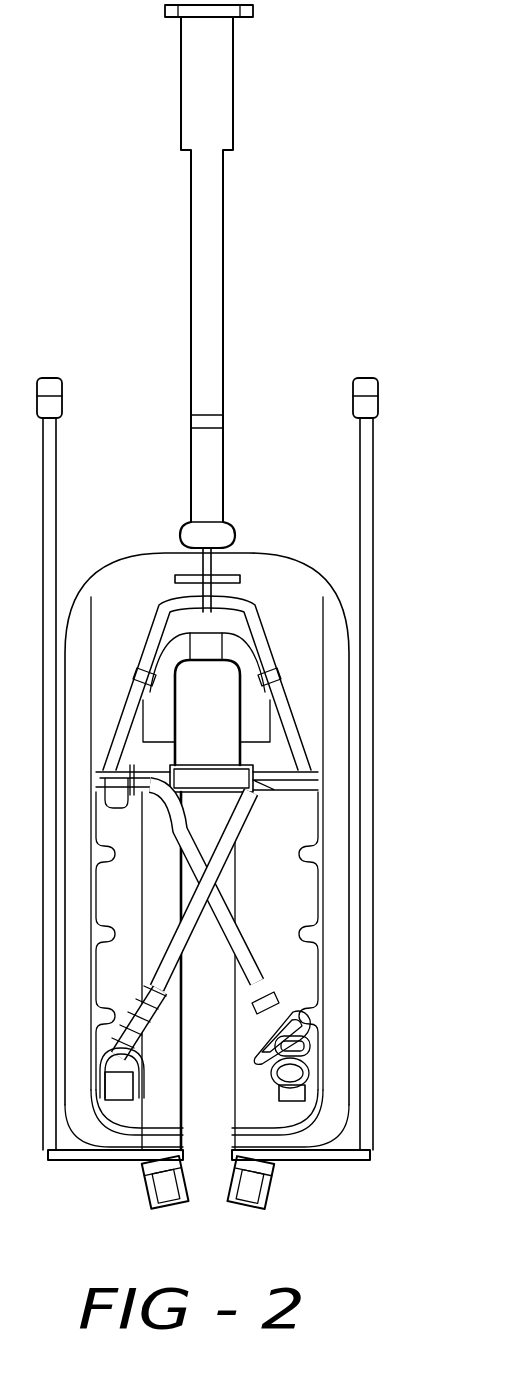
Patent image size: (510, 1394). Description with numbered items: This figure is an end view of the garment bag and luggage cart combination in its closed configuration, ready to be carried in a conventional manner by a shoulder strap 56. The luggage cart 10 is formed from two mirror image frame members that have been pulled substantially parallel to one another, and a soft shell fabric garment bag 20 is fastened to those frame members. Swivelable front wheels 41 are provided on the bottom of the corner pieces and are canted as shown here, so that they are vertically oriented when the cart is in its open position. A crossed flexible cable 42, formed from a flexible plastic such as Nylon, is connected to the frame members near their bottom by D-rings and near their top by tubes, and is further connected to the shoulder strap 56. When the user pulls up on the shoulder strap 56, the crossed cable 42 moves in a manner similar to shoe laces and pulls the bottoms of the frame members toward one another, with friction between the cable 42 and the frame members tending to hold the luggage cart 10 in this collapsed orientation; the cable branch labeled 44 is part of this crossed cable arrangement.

The luggage cart 10 is at (226, 1000).
The garment bag 20 is at (303, 630).
The front wheels 41 is at (146, 1180).
The crossed flexible cable 42 is at (236, 942).
The cable tube 44 is at (165, 948).
The shoulder strap 56 is at (224, 292).